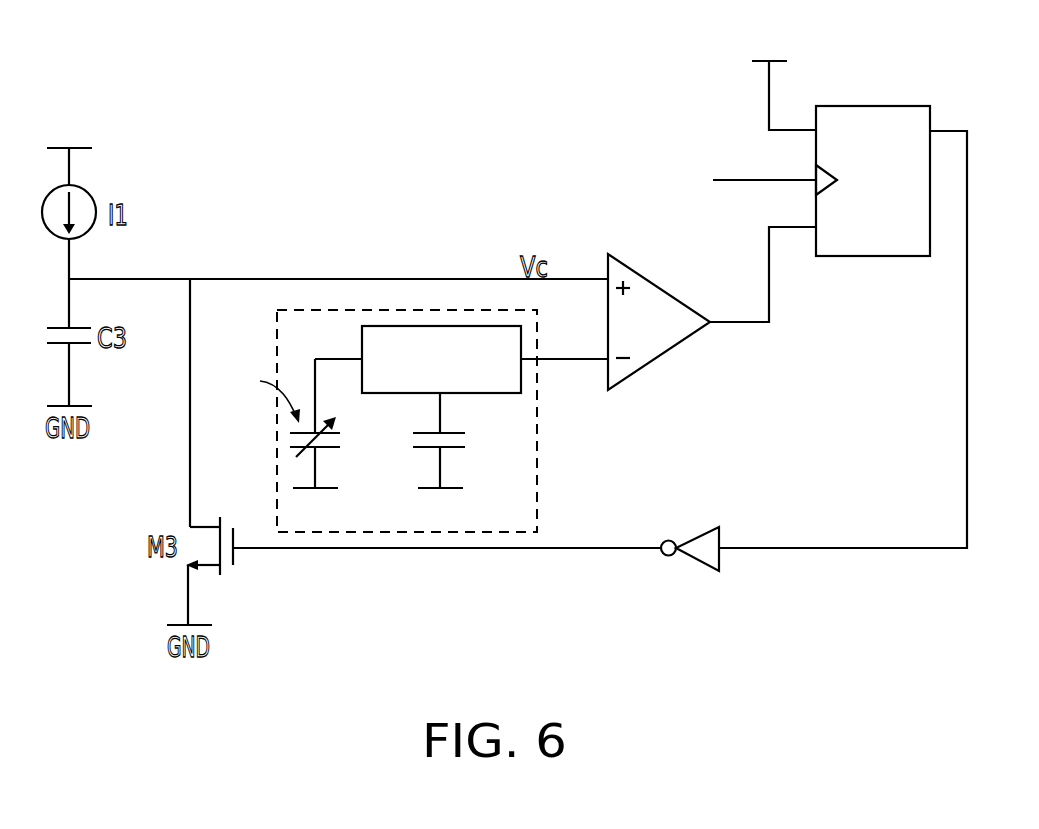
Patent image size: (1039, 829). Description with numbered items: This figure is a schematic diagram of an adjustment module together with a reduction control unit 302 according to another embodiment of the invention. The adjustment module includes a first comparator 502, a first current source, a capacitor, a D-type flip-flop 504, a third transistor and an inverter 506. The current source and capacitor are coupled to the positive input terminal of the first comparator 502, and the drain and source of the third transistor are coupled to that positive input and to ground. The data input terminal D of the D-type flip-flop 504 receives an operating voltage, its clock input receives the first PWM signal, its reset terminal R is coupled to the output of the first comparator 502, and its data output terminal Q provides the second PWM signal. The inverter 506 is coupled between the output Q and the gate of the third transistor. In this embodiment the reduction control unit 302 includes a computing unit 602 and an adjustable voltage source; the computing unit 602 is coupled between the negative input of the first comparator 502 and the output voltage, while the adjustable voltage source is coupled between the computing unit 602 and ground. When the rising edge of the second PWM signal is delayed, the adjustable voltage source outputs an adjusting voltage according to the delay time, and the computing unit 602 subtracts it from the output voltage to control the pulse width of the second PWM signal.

The reduction control unit 302 is at (328, 310).
The computing unit 602 is at (418, 326).
The first comparator 502 is at (658, 285).
The D-type flip-flop 504 is at (873, 106).
The inverter 506 is at (693, 560).